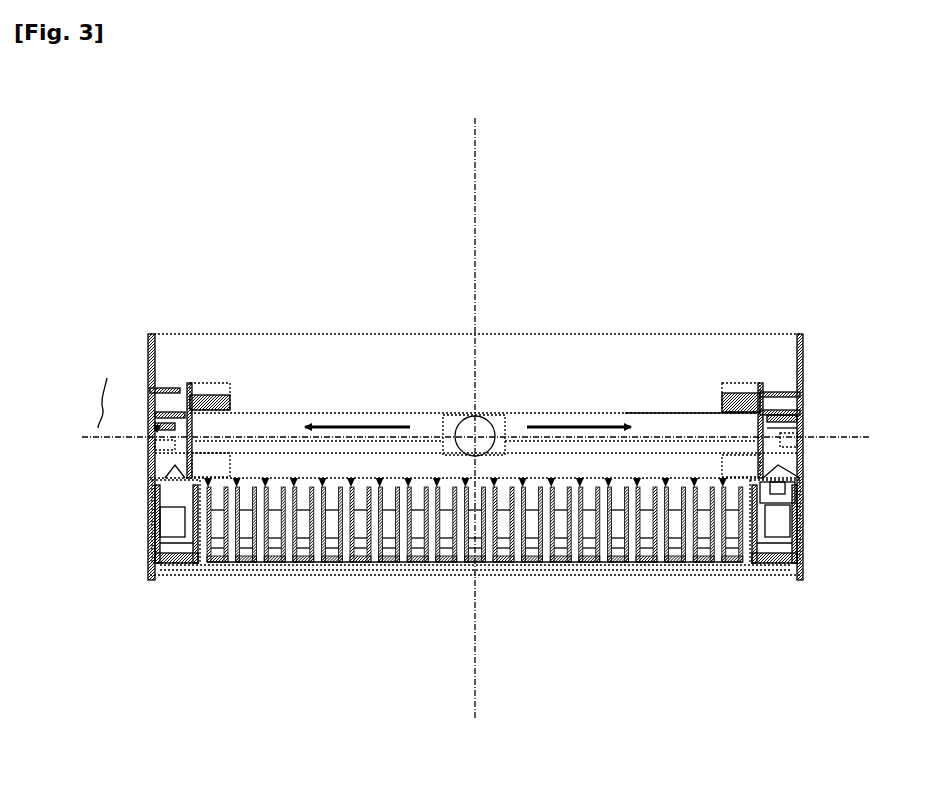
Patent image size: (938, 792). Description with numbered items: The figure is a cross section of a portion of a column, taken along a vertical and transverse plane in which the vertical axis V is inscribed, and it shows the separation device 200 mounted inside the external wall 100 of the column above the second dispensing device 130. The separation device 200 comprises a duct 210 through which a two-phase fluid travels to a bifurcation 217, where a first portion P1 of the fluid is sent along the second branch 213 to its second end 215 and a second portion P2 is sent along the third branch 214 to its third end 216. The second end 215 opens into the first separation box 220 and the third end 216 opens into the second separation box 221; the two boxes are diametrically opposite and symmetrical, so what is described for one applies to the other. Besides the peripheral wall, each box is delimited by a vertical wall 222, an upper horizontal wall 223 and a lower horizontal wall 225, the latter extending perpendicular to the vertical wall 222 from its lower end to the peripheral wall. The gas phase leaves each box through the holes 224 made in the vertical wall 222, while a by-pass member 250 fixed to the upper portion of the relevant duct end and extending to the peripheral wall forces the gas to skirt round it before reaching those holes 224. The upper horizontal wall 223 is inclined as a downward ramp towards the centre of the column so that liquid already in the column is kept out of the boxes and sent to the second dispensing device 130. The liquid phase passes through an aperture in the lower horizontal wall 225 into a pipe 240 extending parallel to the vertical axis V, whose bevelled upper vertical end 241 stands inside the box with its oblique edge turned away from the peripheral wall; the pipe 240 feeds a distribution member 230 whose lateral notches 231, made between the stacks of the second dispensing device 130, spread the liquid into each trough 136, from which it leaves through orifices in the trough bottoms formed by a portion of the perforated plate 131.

The external wall 100 is at (800, 343).
The second dispensing device 130 is at (290, 580).
The perforated plate 131 is at (560, 562).
The trough 136 is at (530, 557).
The separation device 200 is at (386, 376).
The duct 210 is at (560, 413).
The second branch 213 is at (625, 413).
The third branch 214 is at (322, 414).
The second end 215 is at (800, 440).
The third end 216 is at (160, 448).
The bifurcation 217 is at (477, 402).
The first separation box 220 is at (784, 402).
The second separation box 221 is at (150, 390).
The vertical wall 222 is at (732, 383).
The upper horizontal wall 223 is at (773, 392).
The holes 224 is at (235, 384).
The lower horizontal wall 225 is at (150, 505).
The distribution member 230 is at (735, 542).
The notches 231 is at (358, 520).
The pipe 240 is at (800, 512).
The upper vertical end 241 is at (800, 482).
The by-pass member 250 is at (168, 394).
The first portion P1 is at (600, 427).
The second portion P2 is at (385, 428).
The vertical axis V is at (478, 193).